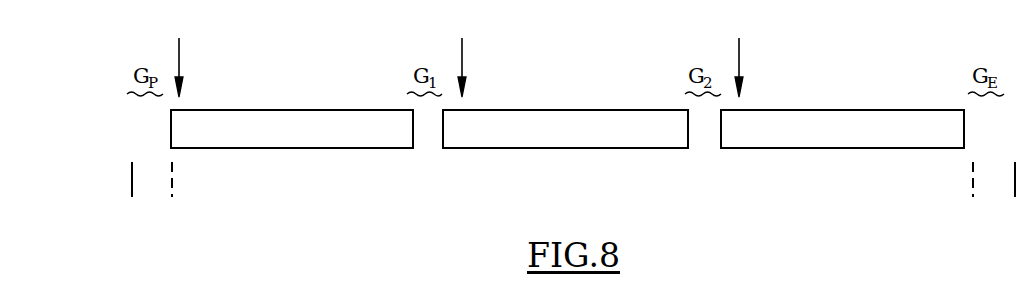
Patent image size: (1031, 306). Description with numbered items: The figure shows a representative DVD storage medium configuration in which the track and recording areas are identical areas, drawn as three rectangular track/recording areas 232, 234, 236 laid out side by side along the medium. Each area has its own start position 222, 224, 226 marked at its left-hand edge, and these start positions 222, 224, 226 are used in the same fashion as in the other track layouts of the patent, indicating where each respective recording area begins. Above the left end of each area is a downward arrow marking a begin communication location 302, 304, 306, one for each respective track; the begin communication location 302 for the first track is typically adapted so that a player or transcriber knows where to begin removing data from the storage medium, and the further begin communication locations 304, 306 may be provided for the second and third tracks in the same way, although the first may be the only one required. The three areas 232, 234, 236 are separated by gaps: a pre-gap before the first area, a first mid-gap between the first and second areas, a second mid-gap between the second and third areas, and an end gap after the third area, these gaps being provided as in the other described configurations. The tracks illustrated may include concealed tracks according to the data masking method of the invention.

The start position 222 is at (172, 128).
The start position 224 is at (445, 128).
The start position 226 is at (722, 128).
The track/recording area 232 is at (222, 130).
The track/recording area 234 is at (505, 130).
The track/recording area 236 is at (780, 130).
The begin communication location 302 is at (179, 48).
The begin communication location 304 is at (463, 47).
The begin communication location 306 is at (740, 47).